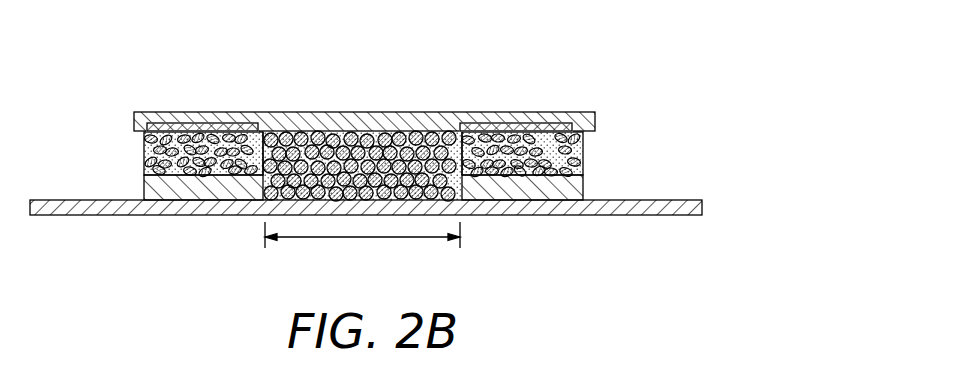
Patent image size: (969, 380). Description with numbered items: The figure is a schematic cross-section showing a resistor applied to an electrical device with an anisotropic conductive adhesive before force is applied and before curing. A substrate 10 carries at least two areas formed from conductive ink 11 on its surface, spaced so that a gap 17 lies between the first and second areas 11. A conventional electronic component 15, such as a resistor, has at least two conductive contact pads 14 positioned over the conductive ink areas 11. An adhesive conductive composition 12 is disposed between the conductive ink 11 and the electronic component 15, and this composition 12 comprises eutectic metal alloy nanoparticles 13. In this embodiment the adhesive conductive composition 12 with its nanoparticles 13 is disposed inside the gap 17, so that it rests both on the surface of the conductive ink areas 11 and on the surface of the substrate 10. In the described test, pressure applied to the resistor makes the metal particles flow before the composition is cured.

The substrate 10 is at (53, 200).
The area formed from conductive ink 11 is at (143, 188).
The adhesive conductive composition 12 is at (583, 167).
The eutectic metal alloy nanoparticles 13 is at (568, 152).
The conductive contact pad 14 is at (227, 116).
The conventional electronic component 15 is at (372, 112).
The gap 17 is at (357, 239).